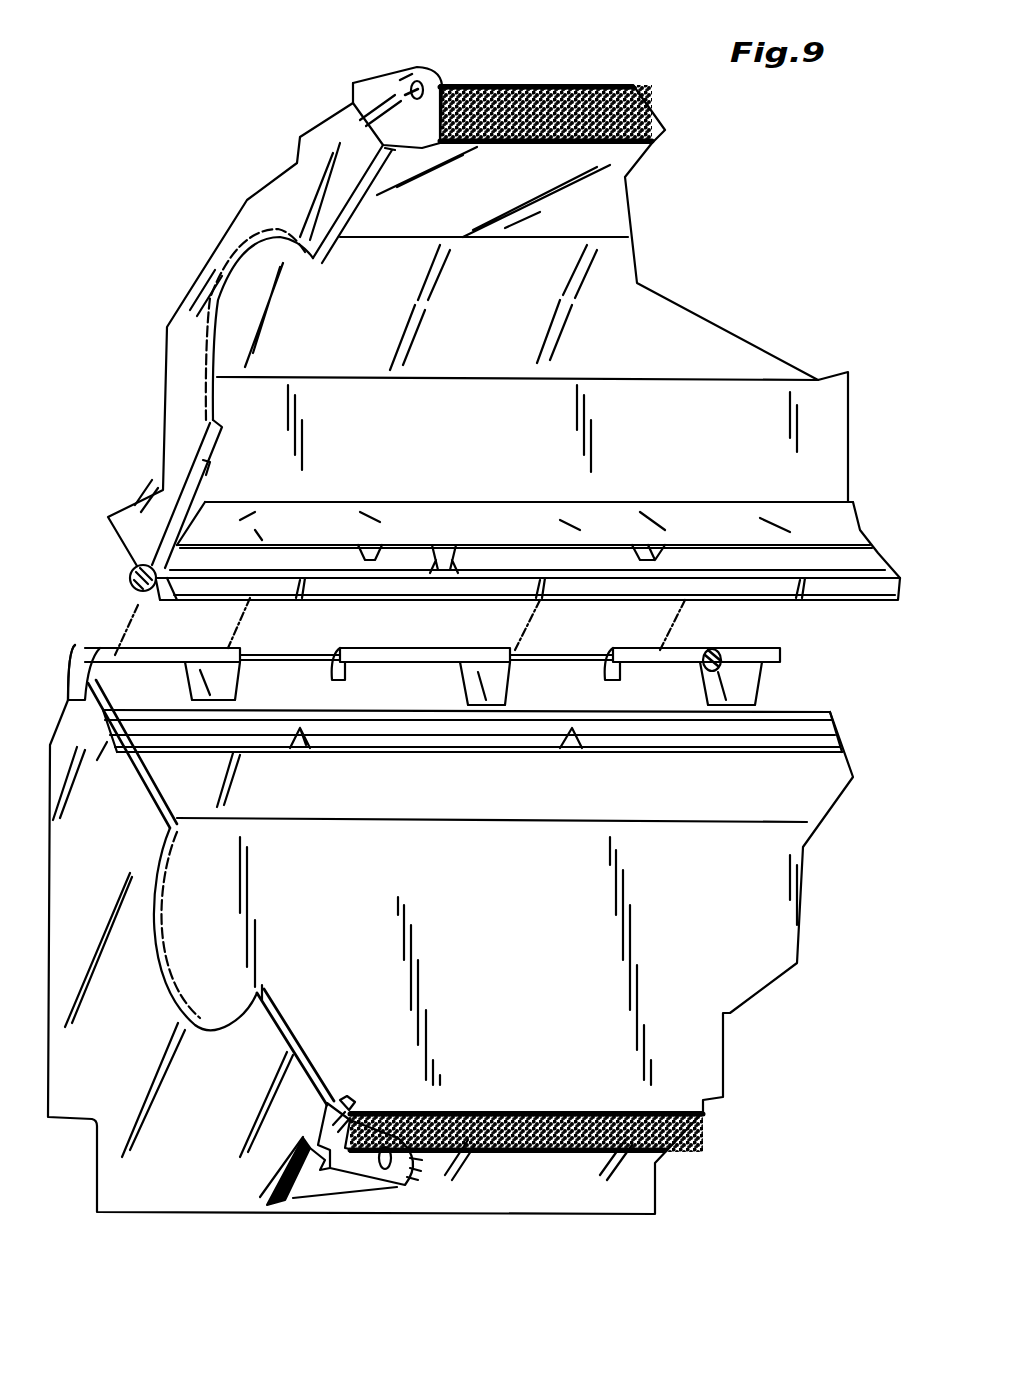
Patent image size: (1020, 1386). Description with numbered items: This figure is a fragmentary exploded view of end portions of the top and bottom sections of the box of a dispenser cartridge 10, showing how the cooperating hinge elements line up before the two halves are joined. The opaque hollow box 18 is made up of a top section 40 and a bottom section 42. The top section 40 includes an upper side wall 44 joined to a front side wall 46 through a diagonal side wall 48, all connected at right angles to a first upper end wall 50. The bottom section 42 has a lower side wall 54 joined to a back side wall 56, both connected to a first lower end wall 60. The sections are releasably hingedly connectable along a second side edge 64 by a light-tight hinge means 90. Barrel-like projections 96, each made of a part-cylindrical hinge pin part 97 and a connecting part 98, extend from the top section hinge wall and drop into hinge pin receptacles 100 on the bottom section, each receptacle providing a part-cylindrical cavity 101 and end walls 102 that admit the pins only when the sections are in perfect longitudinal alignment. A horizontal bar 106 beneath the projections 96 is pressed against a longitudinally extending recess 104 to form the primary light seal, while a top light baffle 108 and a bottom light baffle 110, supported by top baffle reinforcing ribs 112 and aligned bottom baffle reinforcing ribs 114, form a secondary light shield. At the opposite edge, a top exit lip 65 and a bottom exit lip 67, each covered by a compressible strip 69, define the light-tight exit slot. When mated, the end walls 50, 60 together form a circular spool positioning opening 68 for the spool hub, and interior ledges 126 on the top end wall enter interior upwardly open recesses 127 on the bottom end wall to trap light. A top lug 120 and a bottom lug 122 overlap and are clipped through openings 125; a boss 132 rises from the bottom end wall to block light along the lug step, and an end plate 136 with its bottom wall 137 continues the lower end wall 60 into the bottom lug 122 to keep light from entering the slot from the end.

The dispenser cartridge 10 is at (163, 198).
The hollow box 18 is at (190, 430).
The top section 40 is at (618, 232).
The bottom section 42 is at (745, 982).
The upper side wall 44 is at (838, 424).
The front side wall 46 is at (618, 180).
The diagonal side wall 48 is at (655, 302).
The first upper end wall 50 is at (282, 190).
The lower side wall 54 is at (205, 1220).
The back side wall 56 is at (480, 868).
The first lower end wall 60 is at (98, 901).
The second side edge 64 is at (98, 615).
The top exit lip 65 is at (640, 126).
The bottom exit lip 67 is at (674, 1140).
The circular spool positioning opening 68 is at (220, 323).
The compressible strip 69 is at (520, 90).
The hinge means 90 is at (122, 590).
The barrel-like projection 96 is at (886, 604).
The part-cylindrical hinge pin part 97 is at (795, 605).
The connecting part 98 is at (450, 530).
The hinge pin receptacle 100 is at (780, 674).
The part-cylindrical cavity 101 is at (712, 650).
The end wall 102 is at (365, 656).
The longitudinally extending recess 104 is at (125, 715).
The horizontal bar 106 is at (860, 560).
The top light baffle 108 is at (848, 508).
The bottom light baffle 110 is at (830, 770).
The top baffle reinforcing rib 112 is at (365, 545).
The bottom baffle reinforcing rib 114 is at (292, 748).
The top lug 120 is at (396, 76).
The bottom lug 122 is at (345, 1195).
The opening 125 is at (420, 84).
The interior ledge 126 is at (360, 212).
The interior upwardly open recess 127 is at (132, 755).
The boss 132 is at (350, 1096).
The end plate 136 is at (317, 1124).
The bottom wall 137 is at (322, 1207).